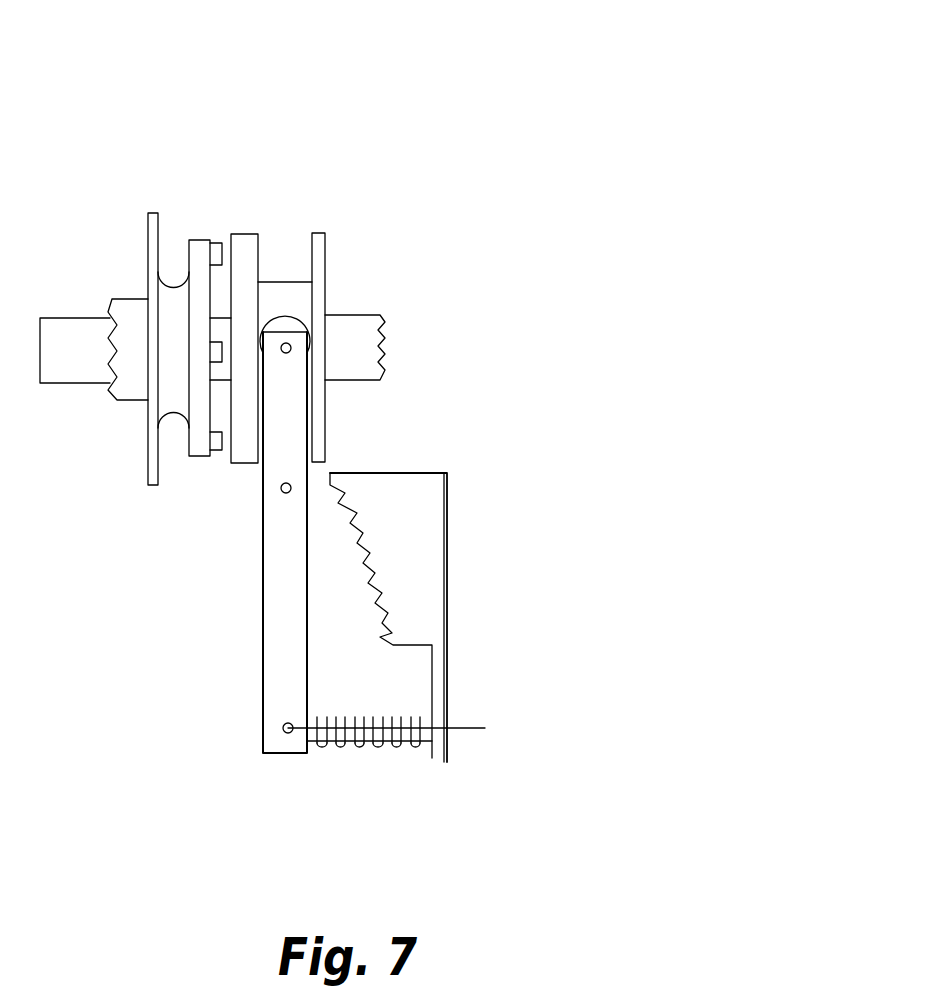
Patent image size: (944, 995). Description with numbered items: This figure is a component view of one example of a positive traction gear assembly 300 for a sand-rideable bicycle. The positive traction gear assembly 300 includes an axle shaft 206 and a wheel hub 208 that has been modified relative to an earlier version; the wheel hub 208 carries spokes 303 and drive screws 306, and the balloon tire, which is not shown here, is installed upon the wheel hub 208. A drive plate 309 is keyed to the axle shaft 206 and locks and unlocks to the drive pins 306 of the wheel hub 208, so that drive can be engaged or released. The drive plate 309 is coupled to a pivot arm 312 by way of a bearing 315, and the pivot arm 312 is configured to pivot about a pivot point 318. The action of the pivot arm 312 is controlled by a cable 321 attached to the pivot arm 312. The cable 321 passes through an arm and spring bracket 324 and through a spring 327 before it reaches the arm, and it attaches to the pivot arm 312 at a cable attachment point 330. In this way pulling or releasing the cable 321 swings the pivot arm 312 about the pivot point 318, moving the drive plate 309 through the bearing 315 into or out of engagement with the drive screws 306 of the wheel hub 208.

The positive traction gear assembly 300 is at (547, 93).
The spokes 303 is at (146, 230).
The wheel hub 208 is at (190, 240).
The drive screws 306 is at (218, 245).
The drive plate 309 is at (260, 243).
The axle shaft 206 is at (384, 332).
The pivot arm 312 is at (282, 755).
The bearing 315 is at (297, 318).
The pivot point 318 is at (291, 486).
The arm and spring bracket 324 is at (447, 513).
The cable 321 is at (463, 725).
The spring 327 is at (367, 742).
The cable attachment point 330 is at (289, 731).